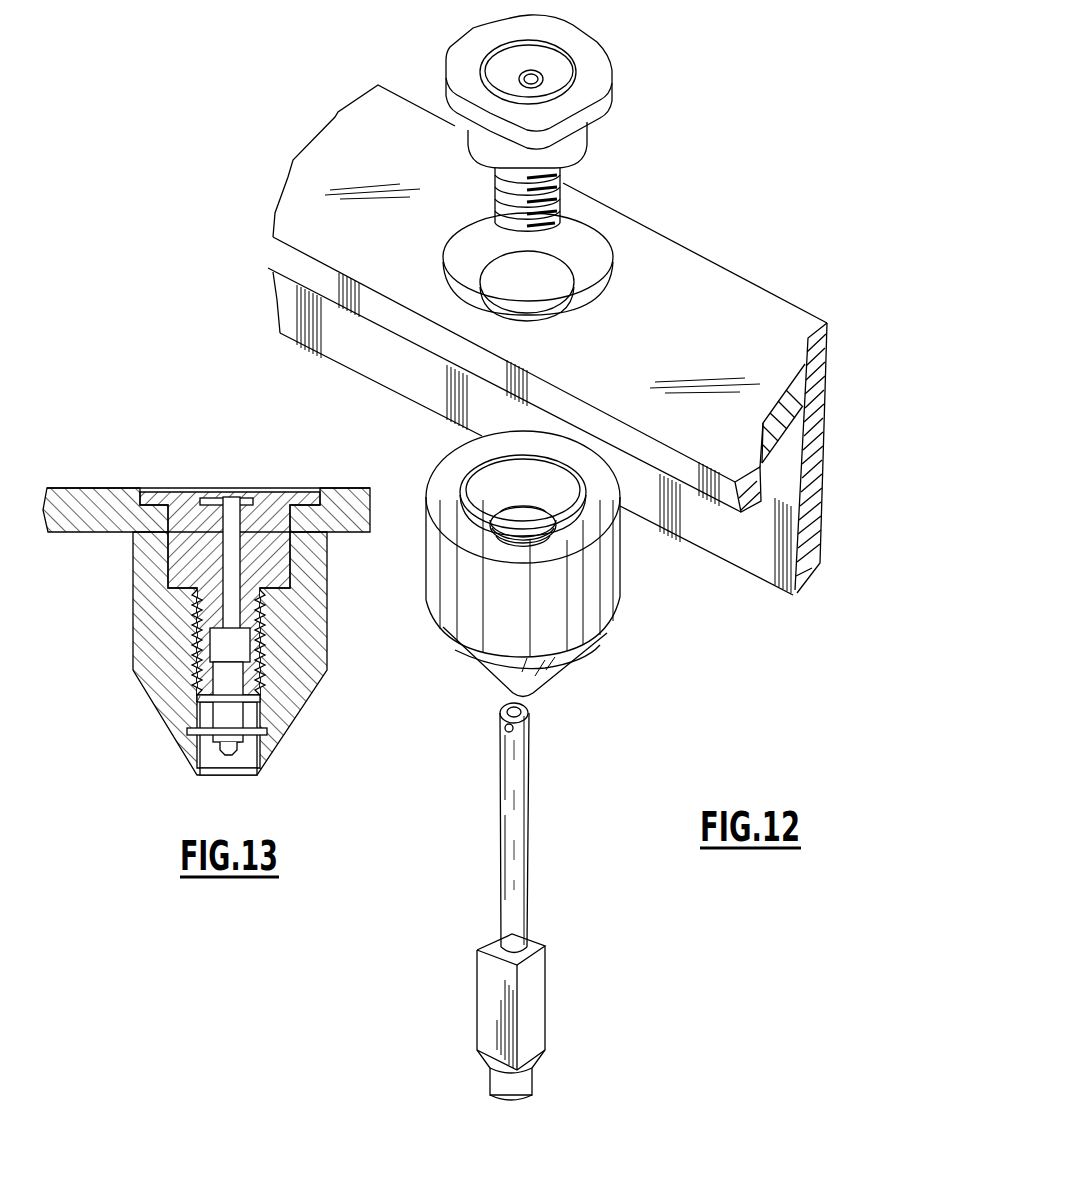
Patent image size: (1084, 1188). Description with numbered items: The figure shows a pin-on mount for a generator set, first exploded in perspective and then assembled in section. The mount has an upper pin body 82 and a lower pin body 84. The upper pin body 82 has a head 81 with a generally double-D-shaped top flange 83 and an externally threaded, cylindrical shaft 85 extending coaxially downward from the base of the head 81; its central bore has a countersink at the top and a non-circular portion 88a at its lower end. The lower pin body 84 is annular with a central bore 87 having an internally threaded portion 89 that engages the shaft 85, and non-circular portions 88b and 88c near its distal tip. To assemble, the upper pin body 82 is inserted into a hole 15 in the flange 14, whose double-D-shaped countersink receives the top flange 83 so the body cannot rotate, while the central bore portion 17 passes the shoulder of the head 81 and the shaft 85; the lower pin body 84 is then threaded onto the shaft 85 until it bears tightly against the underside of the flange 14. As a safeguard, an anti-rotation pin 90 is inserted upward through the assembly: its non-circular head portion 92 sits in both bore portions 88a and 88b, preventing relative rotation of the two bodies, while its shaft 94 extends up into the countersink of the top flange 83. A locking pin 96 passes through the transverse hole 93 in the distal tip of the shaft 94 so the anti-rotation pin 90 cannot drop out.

In FIG. 12, the flange 14 is at (770, 285).
In FIG. 13, the flange 14 is at (117, 488).
In FIG. 12, the hole 15 is at (605, 288).
In FIG. 12, the central bore portion 17 is at (540, 298).
In FIG. 12, the head 81 is at (575, 147).
In FIG. 12, the upper pin body 82 is at (555, 123).
In FIG. 13, the upper pin body 82 is at (307, 558).
In FIG. 12, the top flange 83 is at (450, 50).
In FIG. 12, the lower pin body 84 is at (538, 560).
In FIG. 13, the lower pin body 84 is at (327, 618).
In FIG. 12, the shaft 85 is at (562, 180).
In FIG. 12, the central bore 87 is at (490, 482).
In FIG. 12, the internally threaded portion 89 is at (480, 510).
In FIG. 13, the internally threaded portion 89 is at (200, 698).
In FIG. 12, the anti-rotation pin 90 is at (564, 901).
In FIG. 13, the anti-rotation pin 90 is at (228, 652).
In FIG. 12, the head portion 92 is at (545, 992).
In FIG. 12, the transversely extending hole 93 is at (506, 728).
In FIG. 13, the transversely extending hole 93 is at (215, 720).
In FIG. 12, the shaft 94 is at (530, 887).
In FIG. 13, the shaft 94 is at (233, 638).
In FIG. 13, the locking pin 96 is at (253, 497).
In FIG. 13, the non-circular bore portion 88a is at (243, 700).
In FIG. 13, the non-circular bore portion 88b is at (243, 733).
In FIG. 13, the non-circular bore portion 88c is at (247, 770).